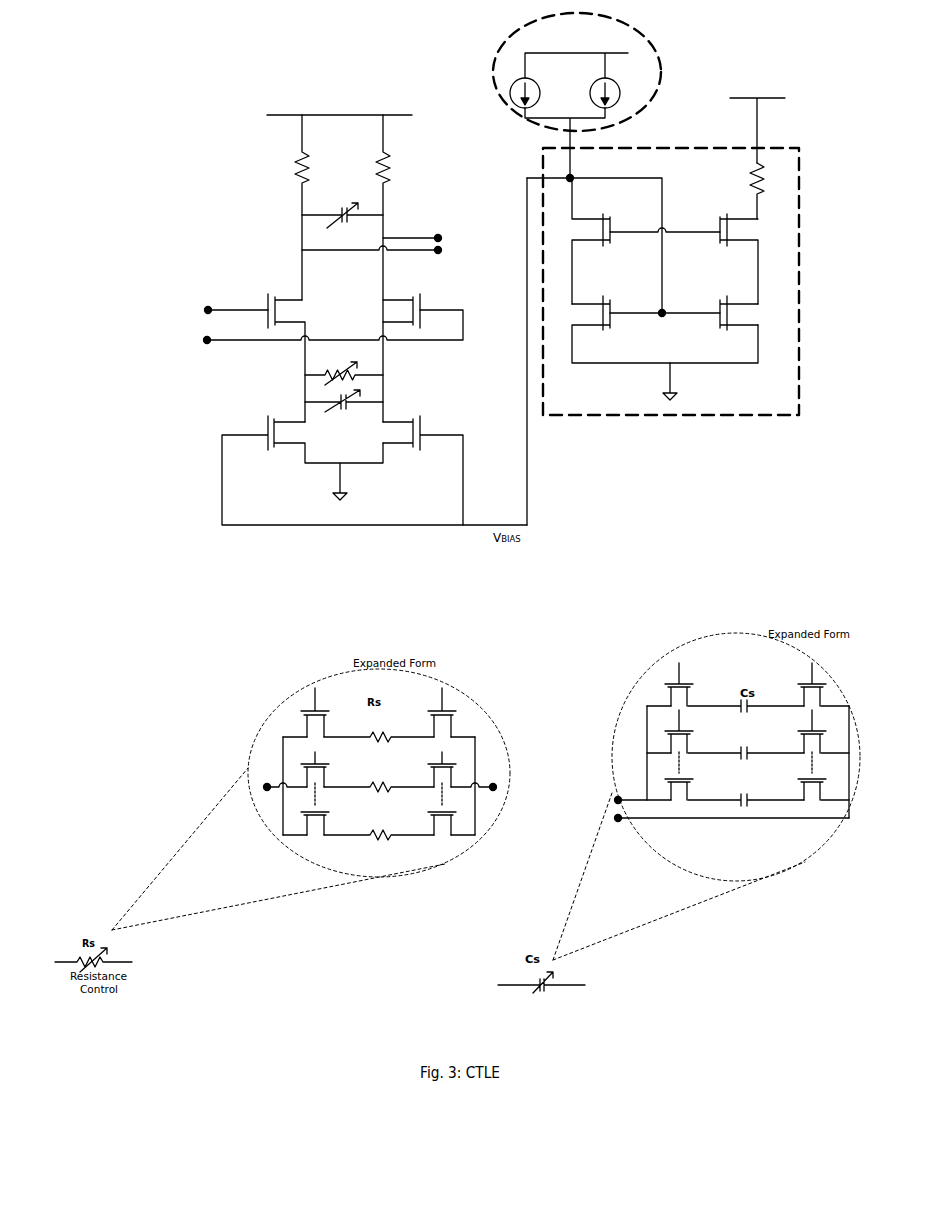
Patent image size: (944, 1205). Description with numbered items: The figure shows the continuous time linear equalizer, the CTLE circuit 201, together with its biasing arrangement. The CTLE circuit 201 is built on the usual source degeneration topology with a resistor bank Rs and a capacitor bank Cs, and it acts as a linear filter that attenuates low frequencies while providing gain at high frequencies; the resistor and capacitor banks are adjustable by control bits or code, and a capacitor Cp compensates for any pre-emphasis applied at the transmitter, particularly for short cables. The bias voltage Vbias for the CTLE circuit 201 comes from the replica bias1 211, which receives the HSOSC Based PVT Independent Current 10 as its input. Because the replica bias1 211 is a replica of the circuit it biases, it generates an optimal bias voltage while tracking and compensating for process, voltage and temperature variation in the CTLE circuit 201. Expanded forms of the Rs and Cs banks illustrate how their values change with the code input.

The HSOSC Based PVT Independent Current 10 is at (589, 13).
The CTLE circuit 201 is at (365, 337).
The replica bias1 211 is at (663, 259).